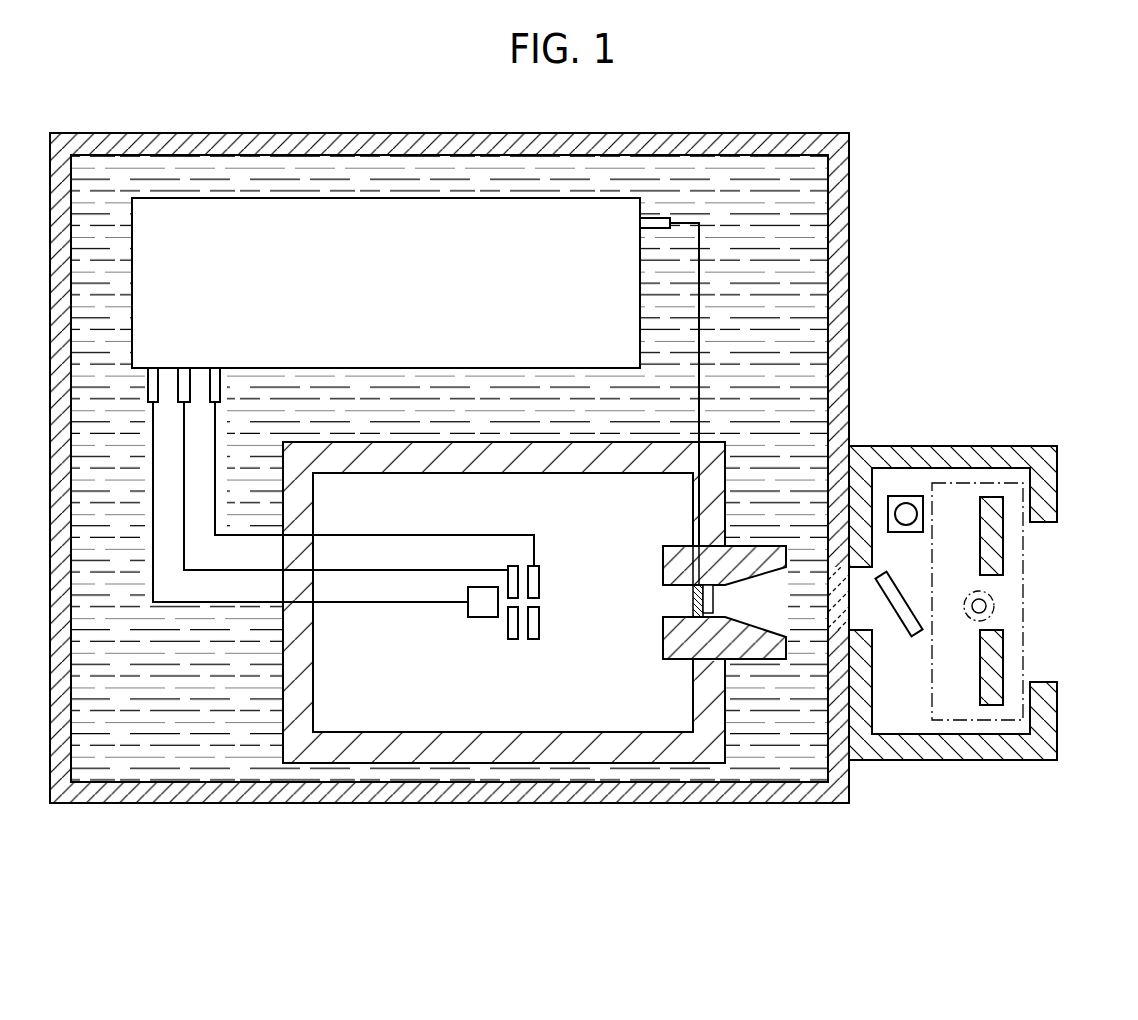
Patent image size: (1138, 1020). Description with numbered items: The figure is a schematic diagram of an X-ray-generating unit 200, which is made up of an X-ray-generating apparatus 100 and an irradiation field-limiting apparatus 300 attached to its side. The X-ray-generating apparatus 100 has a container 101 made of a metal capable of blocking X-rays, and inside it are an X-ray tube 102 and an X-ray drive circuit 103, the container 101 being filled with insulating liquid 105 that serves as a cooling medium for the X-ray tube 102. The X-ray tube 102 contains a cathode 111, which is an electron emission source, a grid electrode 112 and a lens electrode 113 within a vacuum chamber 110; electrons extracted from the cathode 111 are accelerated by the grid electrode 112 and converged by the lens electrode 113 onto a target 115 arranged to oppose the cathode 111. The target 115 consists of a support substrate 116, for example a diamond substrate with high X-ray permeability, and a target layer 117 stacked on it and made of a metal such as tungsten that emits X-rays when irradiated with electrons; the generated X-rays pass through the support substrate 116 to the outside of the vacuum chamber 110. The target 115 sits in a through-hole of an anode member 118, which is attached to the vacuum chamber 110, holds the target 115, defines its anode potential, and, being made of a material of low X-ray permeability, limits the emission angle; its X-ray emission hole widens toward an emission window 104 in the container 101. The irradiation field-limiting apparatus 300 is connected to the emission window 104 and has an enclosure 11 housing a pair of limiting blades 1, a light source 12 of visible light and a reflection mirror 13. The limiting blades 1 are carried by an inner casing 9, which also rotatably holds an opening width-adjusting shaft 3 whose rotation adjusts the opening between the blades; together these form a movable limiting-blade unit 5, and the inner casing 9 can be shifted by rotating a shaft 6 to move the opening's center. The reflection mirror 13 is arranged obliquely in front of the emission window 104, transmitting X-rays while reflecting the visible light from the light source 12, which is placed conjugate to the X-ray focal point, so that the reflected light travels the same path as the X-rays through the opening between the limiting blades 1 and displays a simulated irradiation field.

The limiting blades 1 is at (993, 515).
The opening width-adjusting shaft 3 is at (992, 597).
The limiting-blade unit 5 is at (1026, 607).
The shaft 6 is at (987, 616).
The inner casing 9 is at (1023, 668).
The enclosure 11 is at (1020, 752).
The light source 12 is at (897, 496).
The reflection mirror 13 is at (903, 613).
The X-ray-generating apparatus 100 is at (855, 225).
The container 101 is at (250, 143).
The X-ray tube 102 is at (553, 765).
The X-ray drive circuit 103 is at (386, 212).
The emission window 104 is at (846, 630).
The insulating liquid 105 is at (735, 180).
The vacuum chamber 110 is at (437, 753).
The cathode 111 is at (482, 617).
The grid electrode 112 is at (513, 640).
The lens electrode 113 is at (533, 640).
The target 115 is at (699, 714).
The support substrate 116 is at (710, 615).
The target layer 117 is at (690, 603).
The anode member 118 is at (733, 647).
The X-ray-generating unit 200 is at (980, 122).
The irradiation field-limiting apparatus 300 is at (981, 440).